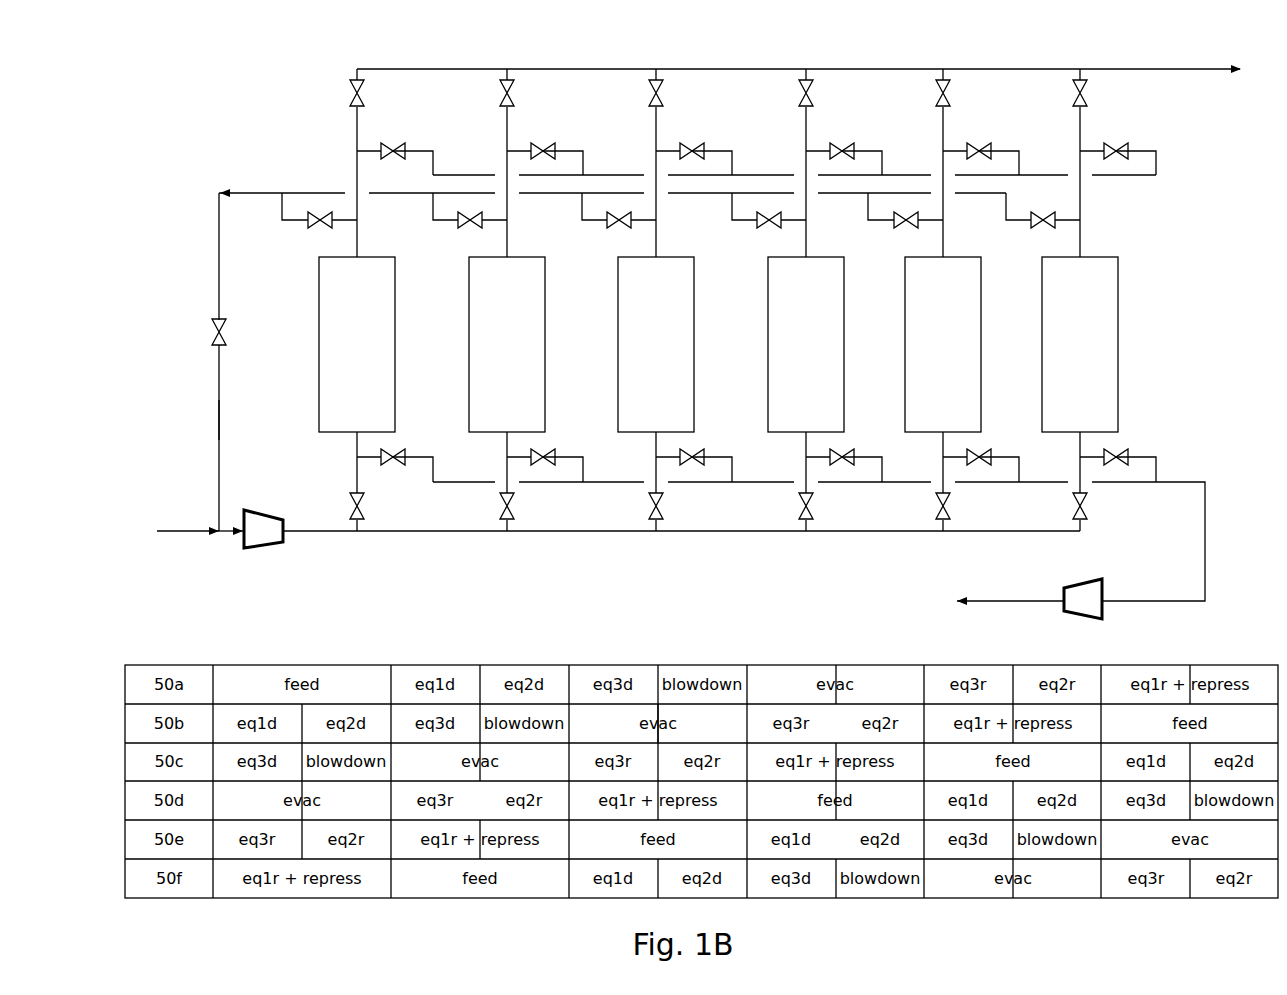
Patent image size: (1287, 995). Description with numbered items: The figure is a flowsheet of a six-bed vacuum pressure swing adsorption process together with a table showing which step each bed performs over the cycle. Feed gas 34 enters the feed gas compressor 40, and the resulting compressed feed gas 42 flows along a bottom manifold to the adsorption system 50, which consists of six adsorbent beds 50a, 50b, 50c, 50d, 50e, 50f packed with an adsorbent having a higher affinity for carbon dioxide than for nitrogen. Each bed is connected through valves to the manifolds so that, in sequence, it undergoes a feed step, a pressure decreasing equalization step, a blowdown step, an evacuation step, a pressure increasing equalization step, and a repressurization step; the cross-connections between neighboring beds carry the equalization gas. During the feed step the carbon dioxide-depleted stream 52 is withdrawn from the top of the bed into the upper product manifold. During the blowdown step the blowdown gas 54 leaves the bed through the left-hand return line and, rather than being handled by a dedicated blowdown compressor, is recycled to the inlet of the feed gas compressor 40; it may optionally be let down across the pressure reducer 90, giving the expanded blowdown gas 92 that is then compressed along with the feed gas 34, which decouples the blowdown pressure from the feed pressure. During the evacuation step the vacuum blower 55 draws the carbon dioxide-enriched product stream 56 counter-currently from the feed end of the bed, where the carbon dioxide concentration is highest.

The feed gas 34 is at (178, 531).
The feed gas compressor 40 is at (273, 497).
The compressed feed gas 42 is at (340, 531).
The adsorption system 50 is at (712, 352).
The adsorption bed 50a is at (341, 353).
The adsorption bed 50b is at (491, 353).
The adsorption bed 50c is at (640, 353).
The adsorption bed 50d is at (790, 353).
The adsorption bed 50e is at (927, 353).
The adsorption bed 50f is at (1064, 353).
The carbon dioxide-depleted stream 52 is at (1158, 68).
The blowdown gas 54 is at (219, 232).
The vacuum blower 55 is at (1088, 579).
The carbon dioxide-enriched product stream 56 is at (1002, 601).
The pressure reducer 90 is at (213, 327).
The expanded blowdown gas 92 is at (219, 419).